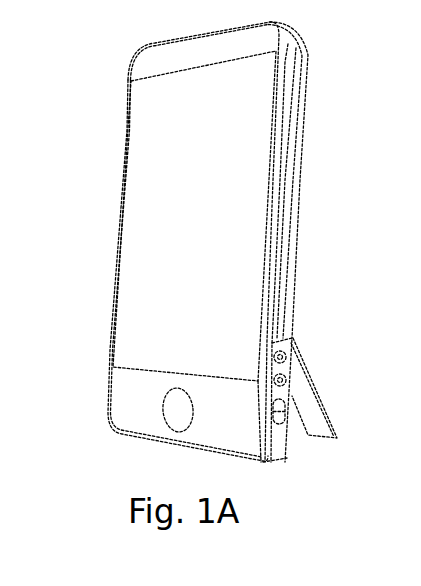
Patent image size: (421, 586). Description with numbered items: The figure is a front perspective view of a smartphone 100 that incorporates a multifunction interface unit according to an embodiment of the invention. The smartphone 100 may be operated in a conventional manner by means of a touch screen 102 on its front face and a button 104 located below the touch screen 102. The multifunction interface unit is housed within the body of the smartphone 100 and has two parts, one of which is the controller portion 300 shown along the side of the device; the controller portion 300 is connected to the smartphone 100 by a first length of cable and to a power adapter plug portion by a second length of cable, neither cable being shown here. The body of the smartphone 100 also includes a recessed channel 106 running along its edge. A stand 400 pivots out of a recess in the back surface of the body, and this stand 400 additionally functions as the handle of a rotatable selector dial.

The smartphone 100 is at (88, 68).
The touch screen 102 is at (140, 258).
The button 104 is at (175, 422).
The recessed channel 106 is at (288, 176).
The controller portion 300 is at (272, 450).
The stand 400 is at (320, 418).